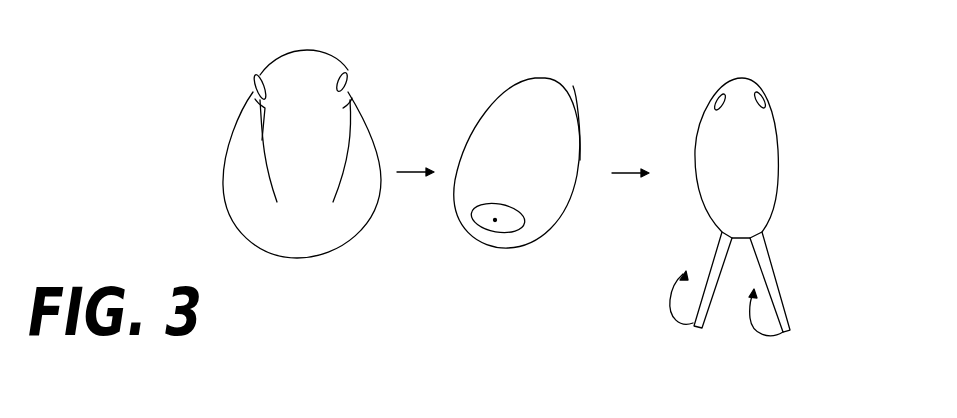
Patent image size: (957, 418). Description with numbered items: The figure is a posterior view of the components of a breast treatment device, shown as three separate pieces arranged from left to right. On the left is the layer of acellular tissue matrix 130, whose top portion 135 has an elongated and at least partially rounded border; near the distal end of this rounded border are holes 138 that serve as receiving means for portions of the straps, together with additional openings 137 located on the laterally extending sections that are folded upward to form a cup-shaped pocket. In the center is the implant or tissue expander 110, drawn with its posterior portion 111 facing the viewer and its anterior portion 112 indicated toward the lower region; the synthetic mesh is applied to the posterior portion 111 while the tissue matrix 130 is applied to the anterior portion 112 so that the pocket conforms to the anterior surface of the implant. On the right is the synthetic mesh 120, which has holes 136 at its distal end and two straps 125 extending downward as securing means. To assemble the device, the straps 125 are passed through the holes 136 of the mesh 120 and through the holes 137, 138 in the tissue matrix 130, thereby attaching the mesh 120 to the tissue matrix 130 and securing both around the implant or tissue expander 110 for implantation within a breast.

The implant or tissue expander 110 is at (527, 81).
The posterior portion 111 is at (573, 95).
The anterior portion 112 is at (548, 223).
The synthetic mesh 120 is at (760, 188).
The straps 125 is at (787, 333).
The acellular tissue matrix 130 is at (268, 158).
The top portion 135 is at (348, 72).
The holes 136 is at (722, 90).
The openings 137 is at (257, 97).
The holes 138 is at (263, 74).